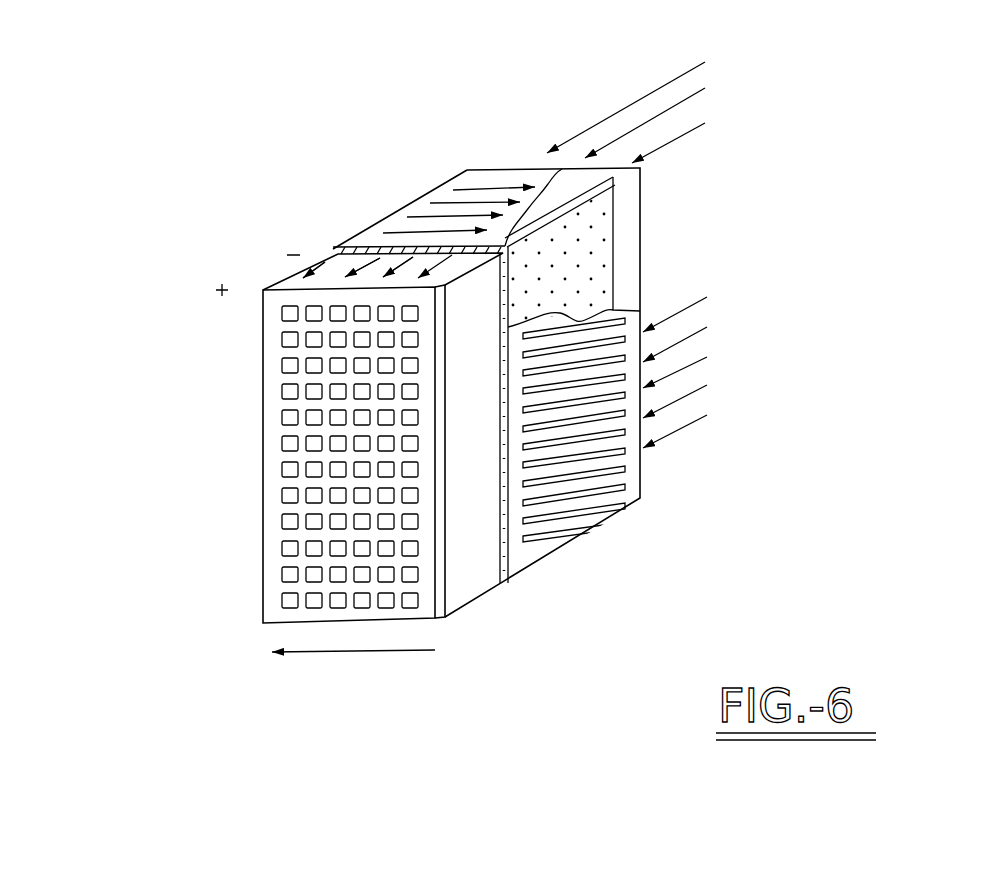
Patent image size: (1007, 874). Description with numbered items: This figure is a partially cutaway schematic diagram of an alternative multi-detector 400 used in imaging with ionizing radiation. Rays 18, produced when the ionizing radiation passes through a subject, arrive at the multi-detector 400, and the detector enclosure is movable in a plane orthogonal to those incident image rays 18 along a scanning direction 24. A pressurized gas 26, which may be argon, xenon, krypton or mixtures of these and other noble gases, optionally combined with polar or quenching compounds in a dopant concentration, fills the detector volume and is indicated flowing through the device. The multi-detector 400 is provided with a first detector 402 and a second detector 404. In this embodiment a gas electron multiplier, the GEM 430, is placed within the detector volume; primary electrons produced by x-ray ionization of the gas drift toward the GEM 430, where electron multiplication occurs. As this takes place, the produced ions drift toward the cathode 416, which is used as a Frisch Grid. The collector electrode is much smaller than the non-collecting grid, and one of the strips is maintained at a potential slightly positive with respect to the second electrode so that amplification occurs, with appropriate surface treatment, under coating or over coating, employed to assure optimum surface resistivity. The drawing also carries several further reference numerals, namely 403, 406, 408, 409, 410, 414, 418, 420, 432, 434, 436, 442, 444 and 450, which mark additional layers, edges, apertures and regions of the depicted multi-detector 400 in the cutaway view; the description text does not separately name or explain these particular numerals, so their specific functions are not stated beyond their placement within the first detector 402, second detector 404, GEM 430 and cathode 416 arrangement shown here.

The multi-detector 400 is at (212, 168).
The rays 18 is at (627, 105).
The scanning direction 24 is at (365, 650).
The pressurized gas 26 is at (423, 212).
The first detector 402 is at (263, 322).
The faceplate edge 403 is at (268, 492).
The second detector 404 is at (370, 223).
The spacer layer 406 is at (358, 235).
The insulating layer 408 is at (333, 248).
The pixel aperture 409 is at (413, 600).
The electrode layer 410 is at (303, 267).
The cathode grid assembly 414 is at (575, 523).
The cathode 416 is at (622, 462).
The grid slot 418 is at (614, 481).
The cutaway opening 420 is at (503, 188).
The GEM 430 is at (645, 180).
The porous electrode panel 432 is at (616, 228).
The porous surface 434 is at (607, 247).
The panel top edge 436 is at (605, 283).
The electron flow arrows 442 is at (390, 203).
The pixel aperture array 444 is at (263, 360).
The dielectric layer 450 is at (508, 583).